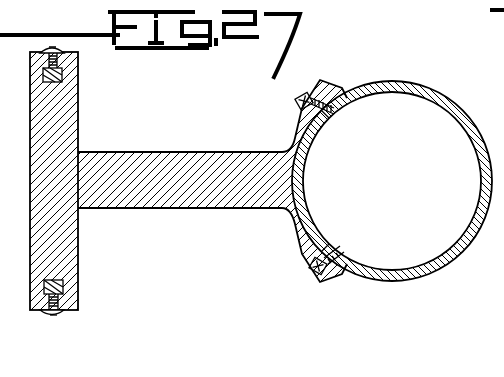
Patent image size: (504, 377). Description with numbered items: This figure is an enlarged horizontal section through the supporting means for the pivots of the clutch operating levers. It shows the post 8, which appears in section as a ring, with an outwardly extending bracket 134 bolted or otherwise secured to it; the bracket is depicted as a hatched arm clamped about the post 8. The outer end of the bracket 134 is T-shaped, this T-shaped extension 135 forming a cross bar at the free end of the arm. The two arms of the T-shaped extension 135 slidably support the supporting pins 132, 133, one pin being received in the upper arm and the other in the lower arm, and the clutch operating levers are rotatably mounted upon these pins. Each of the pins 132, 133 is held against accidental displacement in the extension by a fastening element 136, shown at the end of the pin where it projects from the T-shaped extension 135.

The post 8 is at (422, 84).
The supporting pin 132 is at (64, 78).
The supporting pin 133 is at (66, 288).
The bracket 134 is at (189, 168).
The T-shaped extension 135 is at (60, 162).
The fastening element 136 is at (59, 316).